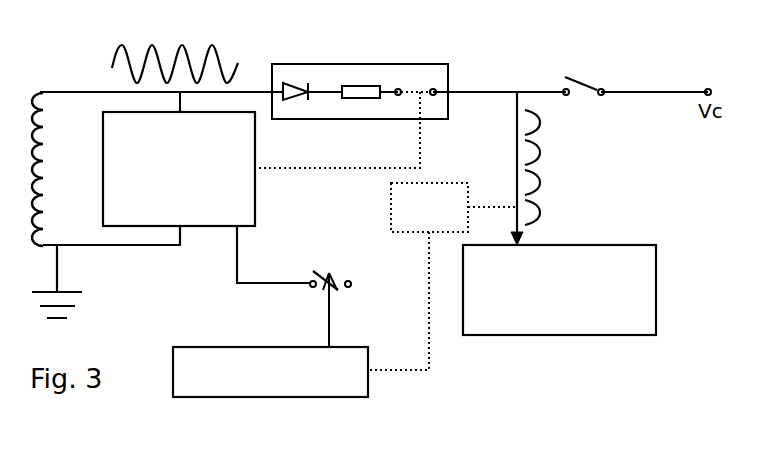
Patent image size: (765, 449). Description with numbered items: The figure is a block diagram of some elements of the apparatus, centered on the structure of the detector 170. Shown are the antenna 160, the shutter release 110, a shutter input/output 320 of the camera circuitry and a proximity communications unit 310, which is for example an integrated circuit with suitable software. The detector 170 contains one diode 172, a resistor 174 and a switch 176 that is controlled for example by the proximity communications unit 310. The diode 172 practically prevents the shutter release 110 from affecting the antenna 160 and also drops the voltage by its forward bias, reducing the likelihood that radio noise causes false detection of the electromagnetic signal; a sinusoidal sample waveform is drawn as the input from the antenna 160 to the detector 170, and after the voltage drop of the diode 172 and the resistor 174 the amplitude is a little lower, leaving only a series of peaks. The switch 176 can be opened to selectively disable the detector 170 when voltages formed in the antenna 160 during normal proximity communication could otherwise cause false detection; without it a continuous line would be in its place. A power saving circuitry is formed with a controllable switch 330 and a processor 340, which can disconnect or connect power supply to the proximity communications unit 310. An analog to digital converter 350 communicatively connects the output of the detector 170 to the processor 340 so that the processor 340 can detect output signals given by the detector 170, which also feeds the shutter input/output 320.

The shutter release 110 is at (597, 85).
The antenna 160 is at (33, 92).
The detector 170 is at (272, 63).
The diode 172 is at (298, 80).
The resistor 174 is at (373, 84).
The switch 176 is at (428, 82).
The proximity communications unit 310 is at (223, 228).
The shutter input/output 320 is at (530, 335).
The controllable switch 330 is at (322, 272).
The processor 340 is at (369, 378).
The analog to digital converter 350 is at (479, 158).